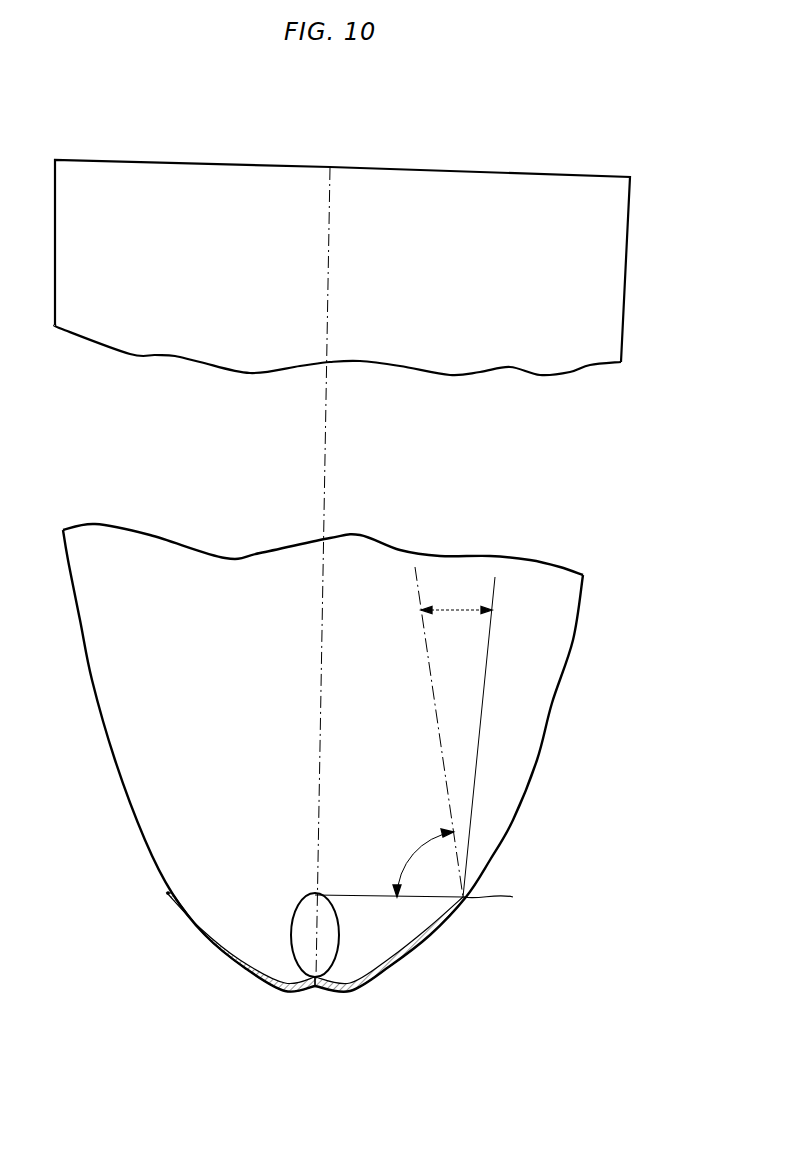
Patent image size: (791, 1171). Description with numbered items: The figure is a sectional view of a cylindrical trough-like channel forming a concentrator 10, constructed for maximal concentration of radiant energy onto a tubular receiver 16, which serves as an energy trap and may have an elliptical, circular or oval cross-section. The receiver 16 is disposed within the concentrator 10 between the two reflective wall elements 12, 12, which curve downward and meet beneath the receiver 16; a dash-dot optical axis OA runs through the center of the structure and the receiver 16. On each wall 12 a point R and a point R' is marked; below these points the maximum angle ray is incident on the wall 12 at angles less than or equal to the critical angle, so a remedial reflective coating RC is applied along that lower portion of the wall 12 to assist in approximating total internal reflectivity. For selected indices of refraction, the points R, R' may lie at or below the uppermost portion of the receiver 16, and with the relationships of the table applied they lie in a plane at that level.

The concentrator 10 is at (222, 691).
The reflective wall element 12 is at (92, 685).
The receiver 16 is at (339, 931).
The optical axis OA is at (331, 460).
The point R is at (423, 899).
The point R' is at (133, 884).
The reflective coating RC is at (447, 933).